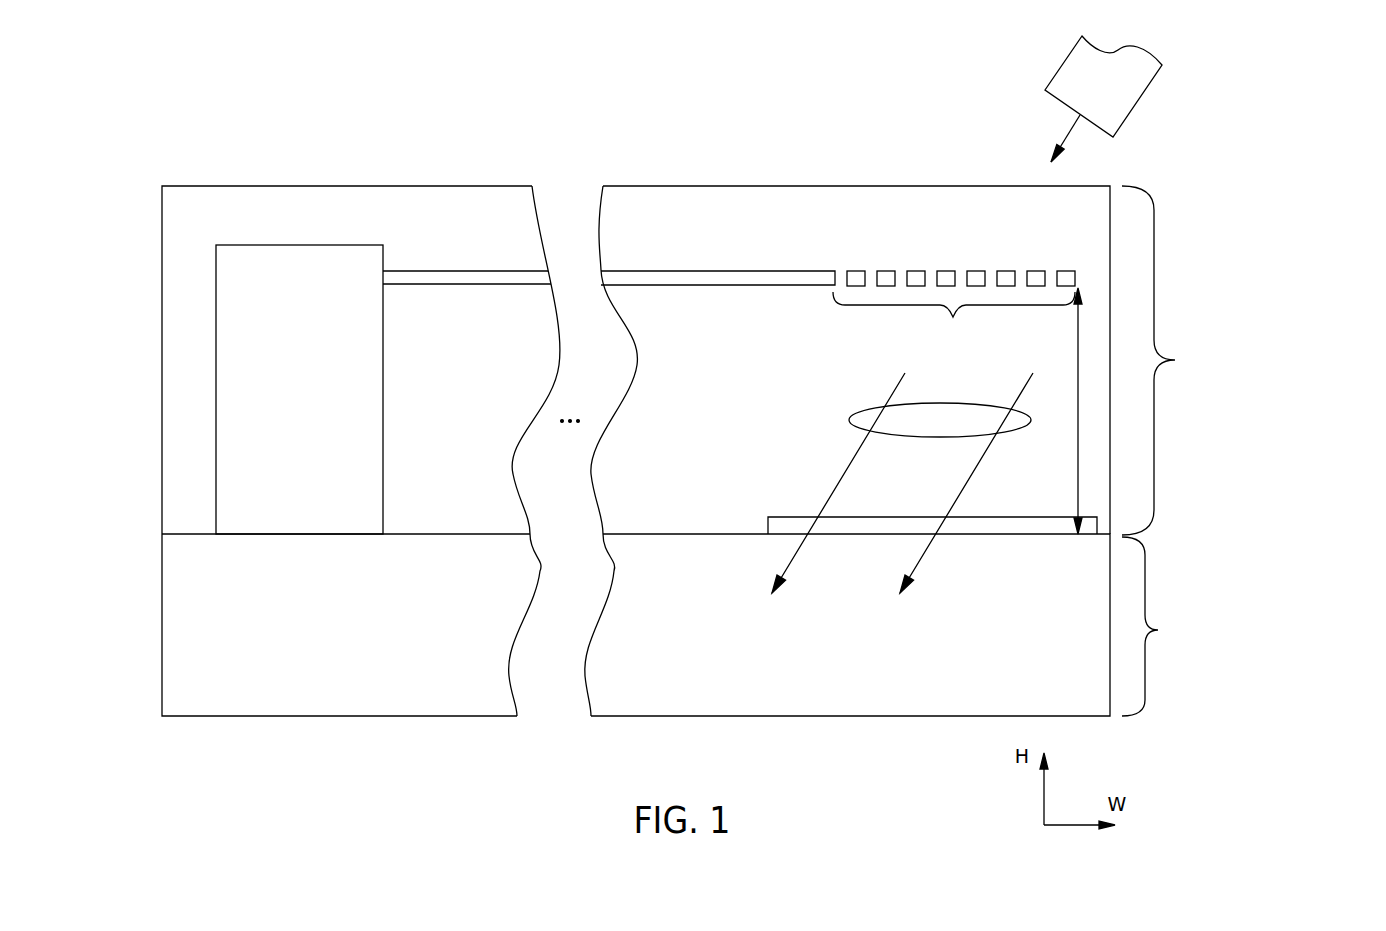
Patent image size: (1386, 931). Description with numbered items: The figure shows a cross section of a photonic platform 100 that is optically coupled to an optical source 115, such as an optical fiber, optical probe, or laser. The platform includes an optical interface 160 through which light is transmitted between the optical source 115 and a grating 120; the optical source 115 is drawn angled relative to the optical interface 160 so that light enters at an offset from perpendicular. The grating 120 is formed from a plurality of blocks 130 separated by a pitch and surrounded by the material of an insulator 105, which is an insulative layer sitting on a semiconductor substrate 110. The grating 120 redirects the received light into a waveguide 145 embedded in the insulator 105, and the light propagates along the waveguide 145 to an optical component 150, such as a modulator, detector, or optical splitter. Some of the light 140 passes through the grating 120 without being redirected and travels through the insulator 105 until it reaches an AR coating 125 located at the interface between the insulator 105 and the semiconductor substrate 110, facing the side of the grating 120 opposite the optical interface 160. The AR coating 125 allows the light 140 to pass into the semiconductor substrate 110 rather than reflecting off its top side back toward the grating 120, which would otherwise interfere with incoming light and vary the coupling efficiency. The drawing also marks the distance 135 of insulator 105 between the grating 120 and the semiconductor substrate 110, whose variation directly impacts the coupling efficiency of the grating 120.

The photonic platform 100 is at (318, 170).
The insulator 105 is at (948, 360).
The semiconductor substrate 110 is at (960, 625).
The optical source 115 is at (1143, 98).
The grating 120 is at (954, 320).
The AR coating 125 is at (783, 517).
The blocks 130 is at (853, 270).
The distance 135 is at (1078, 445).
The light 140 is at (865, 413).
The waveguide 145 is at (623, 270).
The optical component 150 is at (278, 356).
The optical interface 160 is at (852, 322).